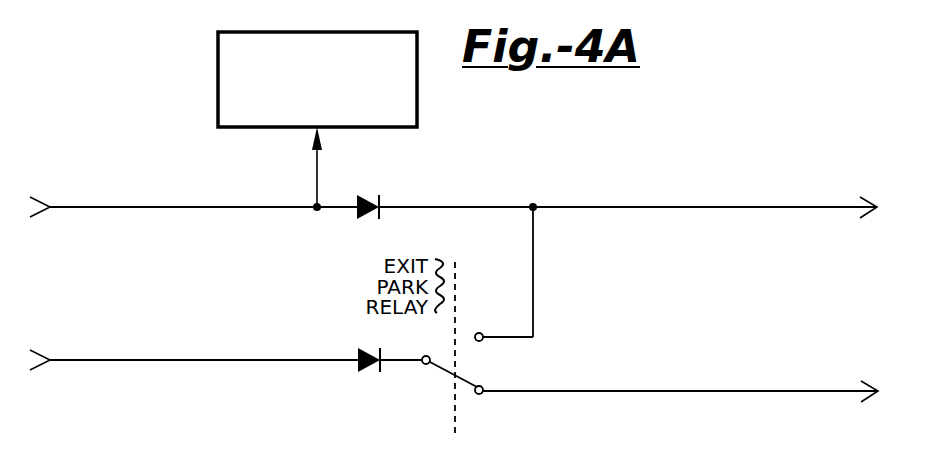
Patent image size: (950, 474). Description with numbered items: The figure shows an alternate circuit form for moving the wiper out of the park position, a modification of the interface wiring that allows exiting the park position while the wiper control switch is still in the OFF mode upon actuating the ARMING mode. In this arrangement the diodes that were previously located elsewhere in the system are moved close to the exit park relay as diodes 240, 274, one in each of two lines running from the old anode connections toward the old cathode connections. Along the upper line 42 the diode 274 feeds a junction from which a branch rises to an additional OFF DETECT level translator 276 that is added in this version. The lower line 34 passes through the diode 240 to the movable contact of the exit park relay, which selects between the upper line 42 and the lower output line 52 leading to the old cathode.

The OFF DETECT level translator 276 is at (417, 93).
The diode 274 is at (360, 195).
The old anode to old cathode line 42 is at (205, 207).
The old anode line 34 is at (202, 360).
The diode 240 is at (361, 374).
The old cathode line 52 is at (578, 391).